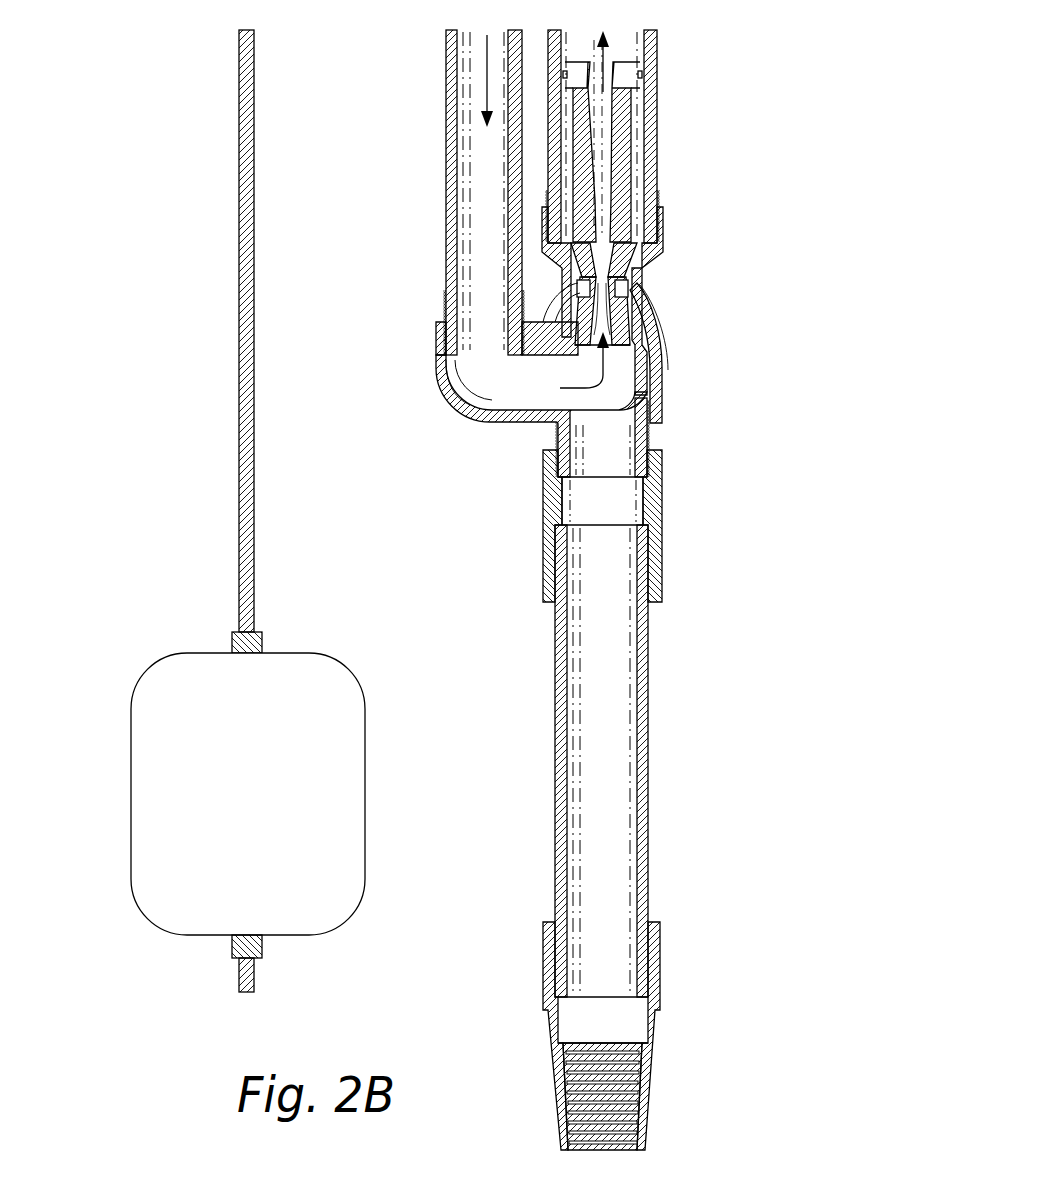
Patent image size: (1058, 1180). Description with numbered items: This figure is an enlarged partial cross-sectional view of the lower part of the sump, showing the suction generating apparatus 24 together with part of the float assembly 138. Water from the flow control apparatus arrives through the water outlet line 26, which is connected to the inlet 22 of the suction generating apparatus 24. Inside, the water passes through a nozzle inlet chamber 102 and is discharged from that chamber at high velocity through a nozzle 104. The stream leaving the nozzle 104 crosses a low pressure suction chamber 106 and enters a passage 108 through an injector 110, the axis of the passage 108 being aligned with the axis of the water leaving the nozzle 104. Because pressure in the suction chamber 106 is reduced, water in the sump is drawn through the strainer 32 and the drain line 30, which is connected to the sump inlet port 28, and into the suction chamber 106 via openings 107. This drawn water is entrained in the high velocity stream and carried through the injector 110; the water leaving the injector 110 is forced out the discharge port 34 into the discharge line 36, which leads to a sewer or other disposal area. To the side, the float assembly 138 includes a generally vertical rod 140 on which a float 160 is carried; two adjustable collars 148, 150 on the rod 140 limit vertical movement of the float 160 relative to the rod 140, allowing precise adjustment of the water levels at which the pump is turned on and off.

The inlet 22 is at (450, 378).
The suction generating apparatus 24 is at (460, 425).
The water outlet line 26 is at (446, 173).
The sump inlet port 28 is at (612, 456).
The drain line 30 is at (650, 668).
The strainer 32 is at (652, 1030).
The discharge port 34 is at (660, 222).
The discharge line 36 is at (660, 92).
The nozzle inlet chamber 102 is at (622, 380).
The nozzle 104 is at (640, 352).
The suction chamber 106 is at (616, 296).
The openings 107 is at (630, 316).
The passage 108 is at (642, 279).
The injector 110 is at (632, 196).
The float assembly 138 is at (178, 448).
The rod 140 is at (240, 414).
The adjustable collar 148 is at (232, 642).
The adjustable collar 150 is at (236, 950).
The float 160 is at (353, 662).